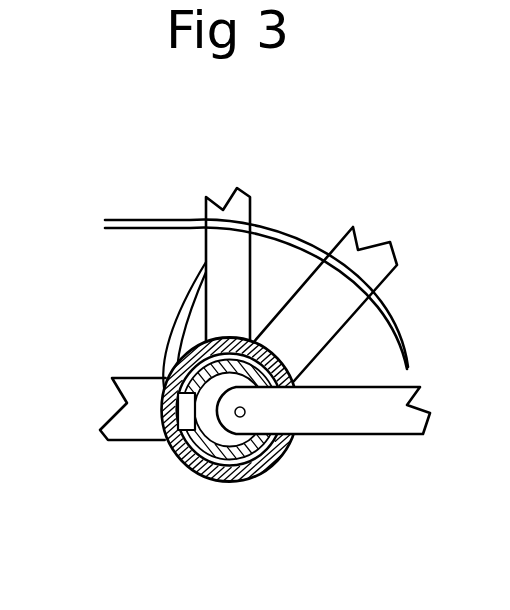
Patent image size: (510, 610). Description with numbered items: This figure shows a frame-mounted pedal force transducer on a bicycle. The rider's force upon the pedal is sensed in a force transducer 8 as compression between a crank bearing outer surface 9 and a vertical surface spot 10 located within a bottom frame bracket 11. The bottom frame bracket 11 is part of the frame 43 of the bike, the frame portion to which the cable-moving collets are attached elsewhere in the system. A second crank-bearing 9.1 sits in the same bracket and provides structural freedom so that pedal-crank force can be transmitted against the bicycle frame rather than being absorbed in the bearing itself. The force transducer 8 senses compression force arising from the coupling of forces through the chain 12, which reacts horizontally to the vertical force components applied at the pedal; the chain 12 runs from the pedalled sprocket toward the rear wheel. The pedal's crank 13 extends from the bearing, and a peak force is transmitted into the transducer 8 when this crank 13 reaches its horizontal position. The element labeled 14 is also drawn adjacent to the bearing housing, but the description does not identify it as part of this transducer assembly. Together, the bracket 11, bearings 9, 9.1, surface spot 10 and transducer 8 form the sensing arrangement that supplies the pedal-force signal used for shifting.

The force transducer 8 is at (170, 445).
The crank bearing outer surface 9 is at (198, 440).
The second crank-bearing 9.1 is at (255, 480).
The vertical surface spot 10 is at (168, 410).
The bottom frame bracket 11 is at (330, 515).
The chain 12 is at (135, 220).
The pedal crank 13 is at (337, 438).
The flange 14 is at (182, 302).
The frame 43 is at (237, 203).